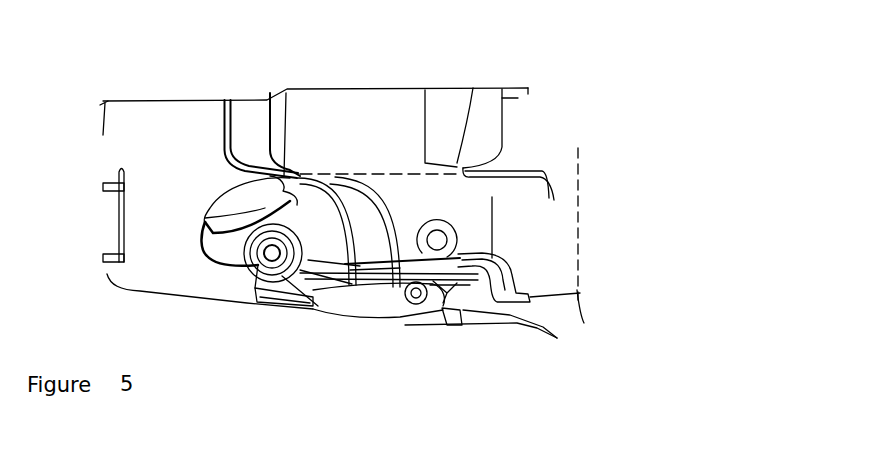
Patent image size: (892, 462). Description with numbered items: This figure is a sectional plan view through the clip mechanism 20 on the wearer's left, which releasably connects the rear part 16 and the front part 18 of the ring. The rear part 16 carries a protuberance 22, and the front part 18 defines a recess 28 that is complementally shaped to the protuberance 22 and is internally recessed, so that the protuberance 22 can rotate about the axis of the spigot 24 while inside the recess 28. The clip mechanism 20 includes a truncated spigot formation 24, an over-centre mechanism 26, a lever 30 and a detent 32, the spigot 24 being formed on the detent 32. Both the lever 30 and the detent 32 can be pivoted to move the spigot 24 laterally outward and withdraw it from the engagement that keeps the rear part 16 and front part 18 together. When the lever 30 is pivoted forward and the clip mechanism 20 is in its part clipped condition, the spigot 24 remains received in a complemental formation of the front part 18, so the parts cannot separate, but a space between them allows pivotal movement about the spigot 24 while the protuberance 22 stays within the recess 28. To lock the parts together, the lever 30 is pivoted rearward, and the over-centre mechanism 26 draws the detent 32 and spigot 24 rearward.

The rear part 16 is at (448, 108).
The front part 18 is at (150, 113).
The clip mechanism 20 is at (318, 340).
The protuberance 22 is at (218, 248).
The spigot formation 24 is at (284, 242).
The over-centre mechanism 26 is at (457, 354).
The recess 28 is at (242, 198).
The lever 30 is at (520, 323).
The detent 32 is at (373, 308).